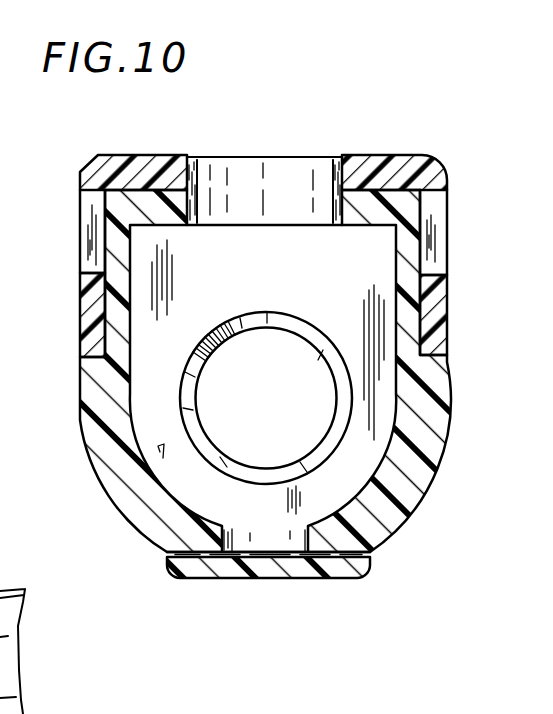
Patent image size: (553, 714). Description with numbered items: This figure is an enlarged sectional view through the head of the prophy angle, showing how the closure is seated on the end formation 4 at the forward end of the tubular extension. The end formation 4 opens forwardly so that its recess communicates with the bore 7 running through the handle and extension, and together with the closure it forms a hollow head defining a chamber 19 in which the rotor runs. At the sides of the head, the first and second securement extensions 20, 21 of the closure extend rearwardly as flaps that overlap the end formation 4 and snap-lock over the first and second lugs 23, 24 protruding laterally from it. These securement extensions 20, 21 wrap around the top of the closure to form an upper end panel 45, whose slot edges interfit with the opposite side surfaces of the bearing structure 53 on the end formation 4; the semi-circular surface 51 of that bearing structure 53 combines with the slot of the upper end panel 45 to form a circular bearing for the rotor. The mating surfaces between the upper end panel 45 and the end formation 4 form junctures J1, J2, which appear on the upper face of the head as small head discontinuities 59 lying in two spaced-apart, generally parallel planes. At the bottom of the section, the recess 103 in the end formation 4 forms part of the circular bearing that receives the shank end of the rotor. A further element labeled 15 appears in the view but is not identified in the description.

The end formation 4 is at (446, 455).
The bore 7 is at (272, 409).
The bottom plate 15 is at (272, 572).
The chamber 19 is at (160, 452).
The first securement extension 20 is at (440, 312).
The second securement extension 21 is at (89, 322).
The first lug 23 is at (434, 222).
The second lug 24 is at (92, 214).
The upper end panel 45 is at (418, 155).
The semi-circular surface 51 is at (288, 207).
The bearing structure 53 is at (240, 157).
The head discontinuities 59 is at (197, 157).
The juncture J1 is at (331, 171).
The juncture J2 is at (199, 170).
The recess 103 is at (308, 527).